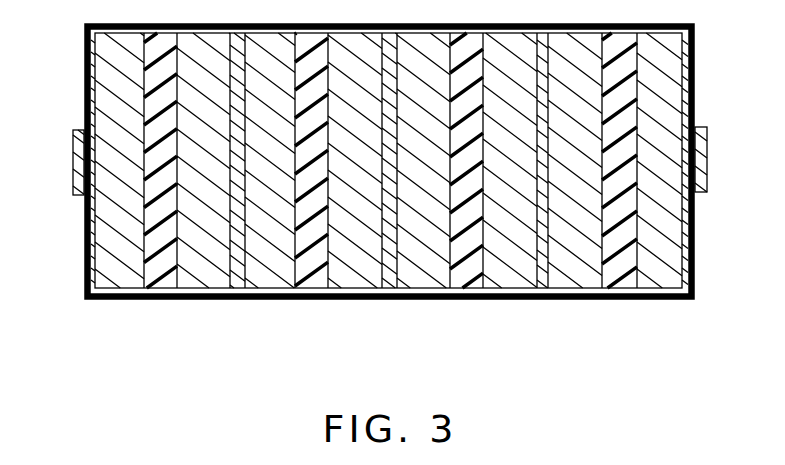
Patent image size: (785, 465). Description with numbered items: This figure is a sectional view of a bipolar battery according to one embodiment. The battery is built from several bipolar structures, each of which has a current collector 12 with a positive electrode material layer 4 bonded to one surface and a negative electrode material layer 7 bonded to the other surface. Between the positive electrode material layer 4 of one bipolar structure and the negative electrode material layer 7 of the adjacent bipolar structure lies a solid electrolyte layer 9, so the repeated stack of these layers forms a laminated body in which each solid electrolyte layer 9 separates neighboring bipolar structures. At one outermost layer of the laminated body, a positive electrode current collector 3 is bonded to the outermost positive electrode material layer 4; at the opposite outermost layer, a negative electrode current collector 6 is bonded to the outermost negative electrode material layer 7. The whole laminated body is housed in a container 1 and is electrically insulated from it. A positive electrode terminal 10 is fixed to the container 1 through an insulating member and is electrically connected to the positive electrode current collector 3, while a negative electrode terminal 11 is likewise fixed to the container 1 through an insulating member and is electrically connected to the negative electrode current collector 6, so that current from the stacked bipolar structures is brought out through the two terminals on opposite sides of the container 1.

The container 1 is at (84, 73).
The positive electrode current collector 3 is at (690, 302).
The positive electrode material layer 4 is at (207, 302).
The negative electrode current collector 6 is at (97, 302).
The negative electrode material layer 7 is at (127, 302).
The solid electrolyte layer 9 is at (162, 302).
The positive electrode terminal 10 is at (712, 151).
The negative electrode terminal 11 is at (73, 165).
The current collector 12 is at (242, 302).